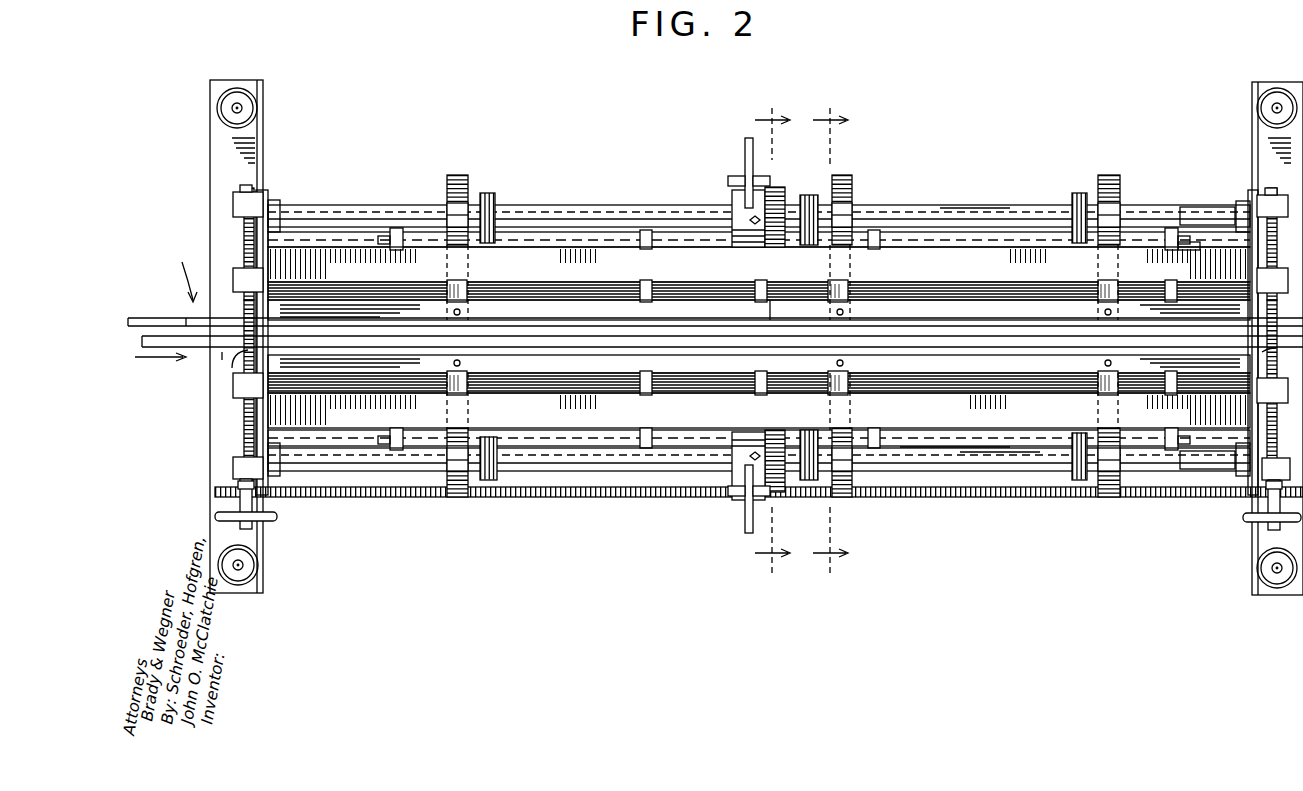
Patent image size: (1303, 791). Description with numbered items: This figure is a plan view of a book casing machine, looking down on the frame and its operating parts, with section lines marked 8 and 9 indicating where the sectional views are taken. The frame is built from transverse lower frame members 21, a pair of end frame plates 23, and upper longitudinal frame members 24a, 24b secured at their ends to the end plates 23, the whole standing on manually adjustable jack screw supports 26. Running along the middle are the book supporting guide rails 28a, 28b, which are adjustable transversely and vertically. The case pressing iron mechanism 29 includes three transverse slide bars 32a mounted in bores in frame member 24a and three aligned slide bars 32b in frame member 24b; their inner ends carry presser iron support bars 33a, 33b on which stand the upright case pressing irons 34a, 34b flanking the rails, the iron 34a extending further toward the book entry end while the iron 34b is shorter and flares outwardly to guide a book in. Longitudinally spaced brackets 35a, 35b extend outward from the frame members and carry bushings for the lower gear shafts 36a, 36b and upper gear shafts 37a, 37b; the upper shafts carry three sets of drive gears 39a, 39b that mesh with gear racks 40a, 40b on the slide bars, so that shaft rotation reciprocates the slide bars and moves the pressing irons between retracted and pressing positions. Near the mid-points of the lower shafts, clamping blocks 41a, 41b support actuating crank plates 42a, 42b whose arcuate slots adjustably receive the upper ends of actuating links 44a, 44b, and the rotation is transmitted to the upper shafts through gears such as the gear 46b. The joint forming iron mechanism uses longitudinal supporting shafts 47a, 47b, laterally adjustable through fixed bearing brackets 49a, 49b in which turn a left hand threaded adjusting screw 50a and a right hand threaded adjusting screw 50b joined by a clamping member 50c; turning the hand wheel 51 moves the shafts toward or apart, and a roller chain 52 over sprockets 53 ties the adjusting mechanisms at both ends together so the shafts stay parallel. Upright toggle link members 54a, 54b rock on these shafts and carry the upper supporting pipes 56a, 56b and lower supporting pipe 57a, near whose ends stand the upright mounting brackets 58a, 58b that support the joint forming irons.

The transverse lower frame members 21 is at (263, 522).
The end frame plates 23 is at (264, 204).
The upper longitudinal frame member 24a is at (548, 206).
The upper longitudinal frame member 24b is at (582, 472).
The jack screw supports 26 is at (242, 100).
The book supporting guide rail 28a is at (166, 318).
The book supporting guide rail 28b is at (208, 347).
The case pressing iron mechanism 29 is at (177, 274).
The transverse slide bars 32a is at (468, 294).
The transverse slide bars 32b is at (470, 392).
The presser iron support bar 33a is at (693, 316).
The presser iron support bar 33b is at (726, 360).
The case pressing iron 34a is at (187, 318).
The case pressing iron 34b is at (223, 358).
The brackets 35a is at (487, 193).
The brackets 35b is at (488, 481).
The lower gear shaft 36a is at (1208, 197).
The lower gear shaft 36b is at (1197, 470).
The upper gear shaft 37a is at (950, 206).
The upper gear shaft 37b is at (985, 466).
The drive gears 39a is at (447, 210).
The drive gears 39b is at (447, 468).
The gear racks 40a is at (452, 178).
The gear racks 40b is at (456, 498).
The clamping block 41a is at (738, 210).
The clamping block 41b is at (735, 470).
The actuating crank plate 42a is at (745, 150).
The actuating crank plate 42b is at (748, 530).
The actuating link 44a is at (742, 178).
The actuating link 44b is at (745, 500).
The gear 46b is at (777, 190).
The longitudinal supporting shaft 47a is at (233, 278).
The longitudinal supporting shaft 47b is at (246, 398).
The fixed bearing bracket 49a is at (233, 202).
The fixed bearing bracket 49b is at (233, 466).
The left hand threaded adjusting screw 50a is at (244, 234).
The right hand threaded adjusting screw 50b is at (244, 424).
The clamping member 50c is at (234, 352).
The hand wheel 51 is at (278, 517).
The roller chain 52 is at (410, 498).
The sprockets 53 is at (262, 490).
The toggle link members 54a is at (646, 240).
The toggle link members 54b is at (646, 430).
The upper supporting pipe 56a is at (552, 283).
The upper supporting pipe 56b is at (970, 446).
The lower supporting pipe 57a is at (1198, 246).
The upright mounting brackets 58a is at (378, 239).
The upright mounting brackets 58b is at (378, 441).
The section line 8 is at (830, 341).
The section line 9 is at (772, 341).